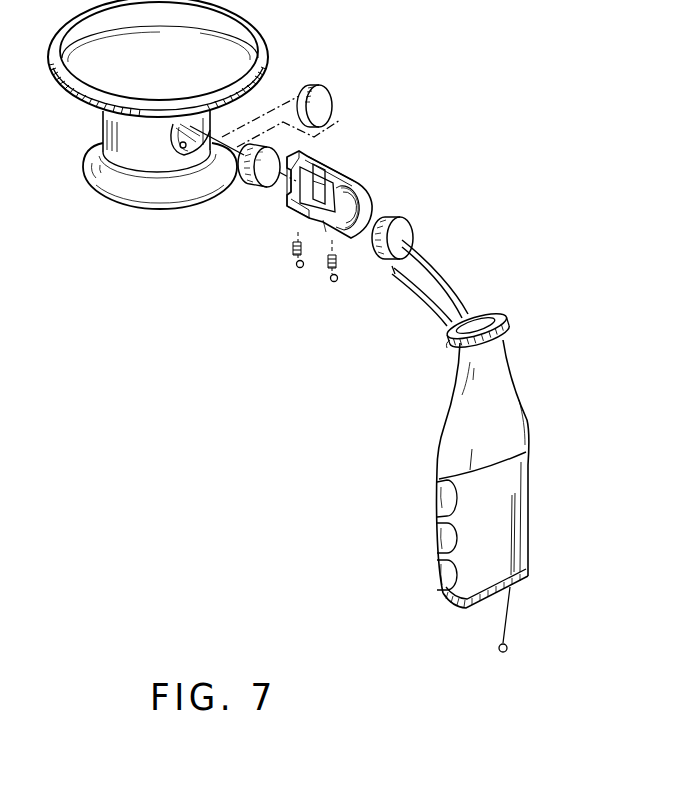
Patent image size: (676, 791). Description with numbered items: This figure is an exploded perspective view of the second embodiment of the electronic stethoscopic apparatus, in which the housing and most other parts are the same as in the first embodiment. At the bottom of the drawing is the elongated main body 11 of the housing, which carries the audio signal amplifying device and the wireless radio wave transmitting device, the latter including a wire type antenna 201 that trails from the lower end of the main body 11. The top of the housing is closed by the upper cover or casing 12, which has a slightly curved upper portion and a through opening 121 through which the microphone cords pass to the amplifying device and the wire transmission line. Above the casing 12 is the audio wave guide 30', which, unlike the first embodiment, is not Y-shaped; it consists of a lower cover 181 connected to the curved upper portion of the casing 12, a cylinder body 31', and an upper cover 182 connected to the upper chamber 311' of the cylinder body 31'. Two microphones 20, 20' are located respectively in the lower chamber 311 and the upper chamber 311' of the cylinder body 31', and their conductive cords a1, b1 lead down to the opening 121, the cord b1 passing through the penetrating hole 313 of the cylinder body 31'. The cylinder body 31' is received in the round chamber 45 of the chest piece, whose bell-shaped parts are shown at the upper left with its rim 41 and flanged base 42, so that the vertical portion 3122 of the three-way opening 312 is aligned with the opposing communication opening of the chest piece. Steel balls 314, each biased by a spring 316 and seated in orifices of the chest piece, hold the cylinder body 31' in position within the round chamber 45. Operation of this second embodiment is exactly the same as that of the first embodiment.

The main body 11 is at (527, 512).
The upper cover 12 is at (520, 385).
The through opening 121 is at (488, 309).
The lower cover 181 is at (448, 342).
The upper cover 182 is at (326, 100).
The microphone 20 is at (424, 238).
The microphone 20' is at (246, 186).
The wire type antenna 201 is at (510, 615).
The audio wave guide 30' is at (463, 132).
The cylinder body 31' is at (352, 180).
The lower chamber 311 is at (396, 204).
The upper chamber 311' is at (265, 209).
The three-way opening 312 is at (330, 168).
The vertical portion 3122 is at (314, 168).
The penetrating hole 313 is at (323, 222).
The steel ball 314 is at (298, 268).
The spring 316 is at (296, 246).
The funnel rim 41 is at (246, 24).
The funnel base 42 is at (141, 202).
The round chamber 45 is at (195, 222).
The first tube a1 is at (457, 283).
The cord b1 is at (428, 298).